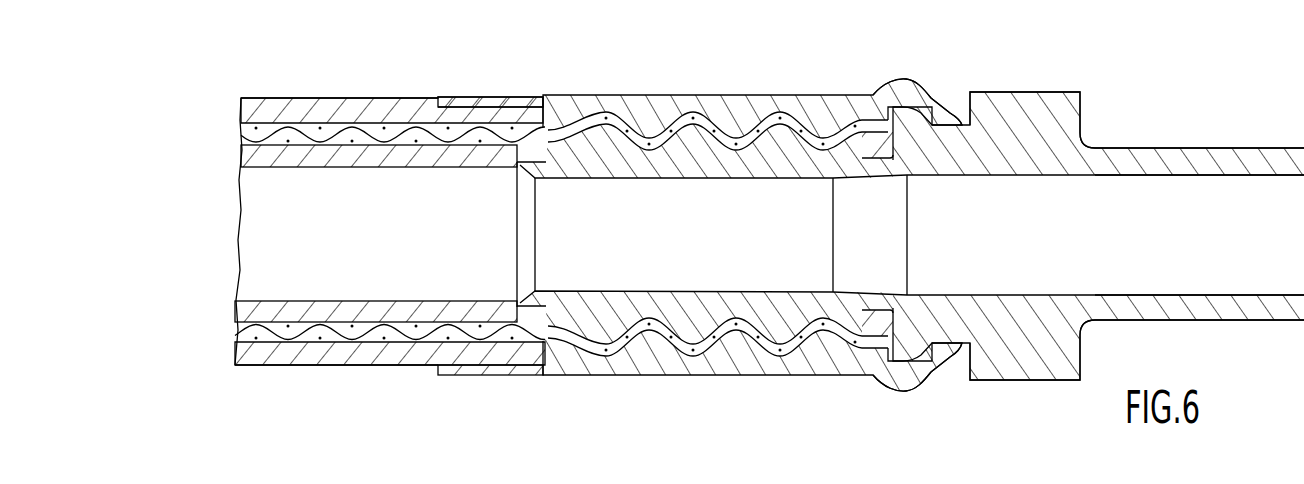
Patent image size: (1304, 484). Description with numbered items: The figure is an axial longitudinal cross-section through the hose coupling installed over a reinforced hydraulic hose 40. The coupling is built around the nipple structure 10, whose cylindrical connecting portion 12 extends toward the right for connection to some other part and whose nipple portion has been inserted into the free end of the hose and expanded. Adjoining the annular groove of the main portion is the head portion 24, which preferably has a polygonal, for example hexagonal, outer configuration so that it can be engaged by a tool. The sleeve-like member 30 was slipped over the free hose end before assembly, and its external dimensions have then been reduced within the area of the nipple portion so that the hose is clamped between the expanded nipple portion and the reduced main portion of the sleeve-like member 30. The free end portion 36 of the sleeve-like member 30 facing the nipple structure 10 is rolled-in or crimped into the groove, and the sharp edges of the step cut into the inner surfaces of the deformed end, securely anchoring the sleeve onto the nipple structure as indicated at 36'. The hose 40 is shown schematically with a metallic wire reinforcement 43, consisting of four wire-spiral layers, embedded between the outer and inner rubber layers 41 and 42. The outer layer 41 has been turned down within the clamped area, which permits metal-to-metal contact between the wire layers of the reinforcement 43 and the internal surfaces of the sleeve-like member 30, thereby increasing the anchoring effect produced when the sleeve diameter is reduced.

The nipple structure 10 is at (1057, 380).
The cylindrical connecting portion 12 is at (1150, 148).
The head portion 24 is at (1033, 102).
The sleeve-like member 30 is at (668, 375).
The free end portion of the sleeve-like member 36 is at (902, 214).
The anchored portion of the sleeve-like member 36' is at (952, 205).
The hydraulic hose 40 is at (245, 371).
The outer rubber layer 41 is at (335, 357).
The inner rubber layer 42 is at (250, 310).
The metallic wire reinforcement 43 is at (248, 332).